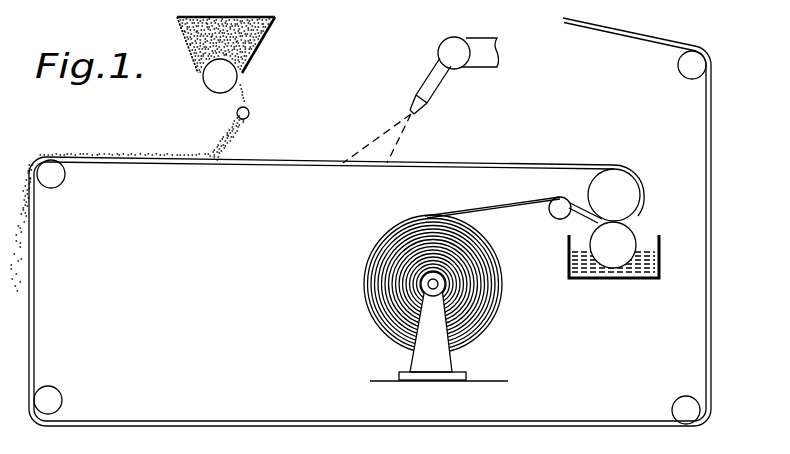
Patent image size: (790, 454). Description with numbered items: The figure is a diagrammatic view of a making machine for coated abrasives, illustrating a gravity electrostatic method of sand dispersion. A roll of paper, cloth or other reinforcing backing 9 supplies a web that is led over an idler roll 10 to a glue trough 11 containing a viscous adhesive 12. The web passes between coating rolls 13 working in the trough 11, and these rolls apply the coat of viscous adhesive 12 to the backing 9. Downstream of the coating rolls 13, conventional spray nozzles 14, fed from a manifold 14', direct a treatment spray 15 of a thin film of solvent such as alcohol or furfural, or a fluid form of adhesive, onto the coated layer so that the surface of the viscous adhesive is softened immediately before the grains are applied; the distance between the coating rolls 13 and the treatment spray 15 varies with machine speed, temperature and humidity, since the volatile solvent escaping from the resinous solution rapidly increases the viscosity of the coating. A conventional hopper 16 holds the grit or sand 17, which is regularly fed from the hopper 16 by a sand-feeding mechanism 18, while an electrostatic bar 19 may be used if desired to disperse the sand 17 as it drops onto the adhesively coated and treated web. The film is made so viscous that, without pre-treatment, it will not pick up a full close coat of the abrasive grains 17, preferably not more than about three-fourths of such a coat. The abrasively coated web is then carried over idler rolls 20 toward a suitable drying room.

The roll of backing 9 is at (497, 306).
The idler roll 10 is at (557, 210).
The glue trough 11 is at (630, 284).
The viscous adhesive 12 is at (657, 263).
The coating rolls 13 is at (603, 183).
The spray nozzles 14 is at (447, 86).
The manifold 14' is at (468, 39).
The treatment spray 15 is at (400, 137).
The hopper 16 is at (266, 45).
The sand 17 is at (194, 60).
The sand-feeding mechanism 18 is at (215, 83).
The electrostatic bar 19 is at (264, 117).
The idler rolls 20 is at (57, 185).